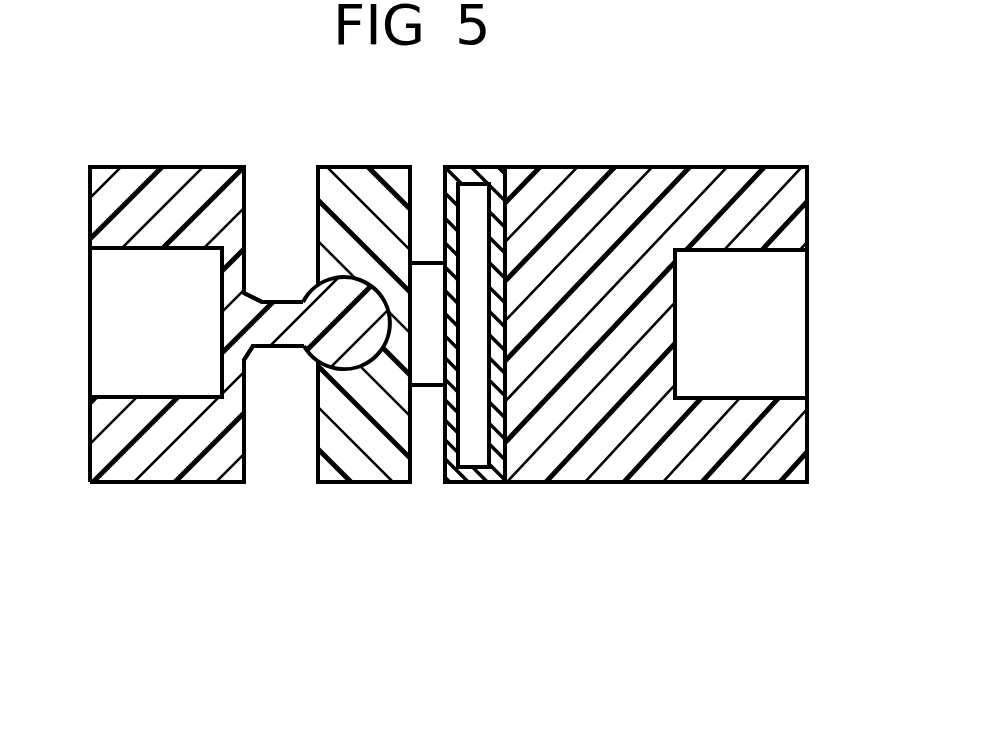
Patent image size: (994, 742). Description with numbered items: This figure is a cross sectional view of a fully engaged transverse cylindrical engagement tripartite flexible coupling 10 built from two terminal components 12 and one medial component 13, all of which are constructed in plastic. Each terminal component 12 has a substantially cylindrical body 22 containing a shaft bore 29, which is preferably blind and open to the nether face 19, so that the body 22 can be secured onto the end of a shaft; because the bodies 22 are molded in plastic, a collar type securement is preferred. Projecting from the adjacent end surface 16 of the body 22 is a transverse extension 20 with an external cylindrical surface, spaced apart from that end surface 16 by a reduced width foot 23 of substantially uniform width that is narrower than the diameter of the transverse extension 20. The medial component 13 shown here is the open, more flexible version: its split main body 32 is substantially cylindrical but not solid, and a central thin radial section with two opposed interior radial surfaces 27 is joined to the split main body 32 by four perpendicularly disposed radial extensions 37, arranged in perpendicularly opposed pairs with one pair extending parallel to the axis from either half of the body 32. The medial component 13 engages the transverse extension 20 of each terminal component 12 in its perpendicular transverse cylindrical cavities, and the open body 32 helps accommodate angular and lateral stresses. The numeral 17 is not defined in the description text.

The flexible shaft coupling 10 is at (115, 52).
The terminal component 12 is at (168, 577).
The medial component 13 is at (393, 528).
The end surface 16 is at (245, 474).
The socket contact 17 is at (313, 465).
The nether face 19 is at (850, 273).
The transverse extension 20 is at (319, 349).
The body 22 is at (203, 140).
The reduced width foot 23 is at (283, 313).
The interior radial surface 27 is at (462, 232).
The shaft bore 29 is at (115, 348).
The medial body 32 is at (352, 178).
The radial extension 37 is at (447, 193).